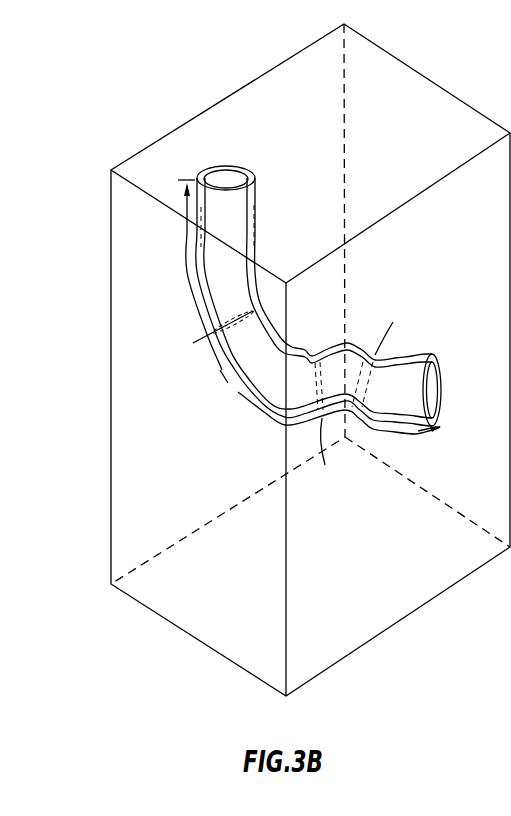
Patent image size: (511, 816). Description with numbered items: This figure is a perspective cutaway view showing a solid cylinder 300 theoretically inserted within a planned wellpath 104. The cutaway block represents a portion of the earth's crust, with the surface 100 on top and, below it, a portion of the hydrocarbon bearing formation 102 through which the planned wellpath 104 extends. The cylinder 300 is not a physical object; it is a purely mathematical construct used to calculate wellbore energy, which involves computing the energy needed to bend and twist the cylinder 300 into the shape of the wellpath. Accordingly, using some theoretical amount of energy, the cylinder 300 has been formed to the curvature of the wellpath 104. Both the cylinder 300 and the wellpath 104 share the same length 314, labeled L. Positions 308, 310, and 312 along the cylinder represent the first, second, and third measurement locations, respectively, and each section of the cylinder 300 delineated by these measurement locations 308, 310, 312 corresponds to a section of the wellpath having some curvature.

The surface of the earth 100 is at (282, 360).
The hydrocarbon bearing formation 102 is at (140, 410).
The planned wellpath 104 is at (403, 437).
The cylinder 300 is at (228, 207).
The measurement location E1 308 is at (167, 341).
The measurement location E2 310 is at (349, 487).
The measurement location E3 312 is at (410, 302).
The length L 314 is at (227, 402).